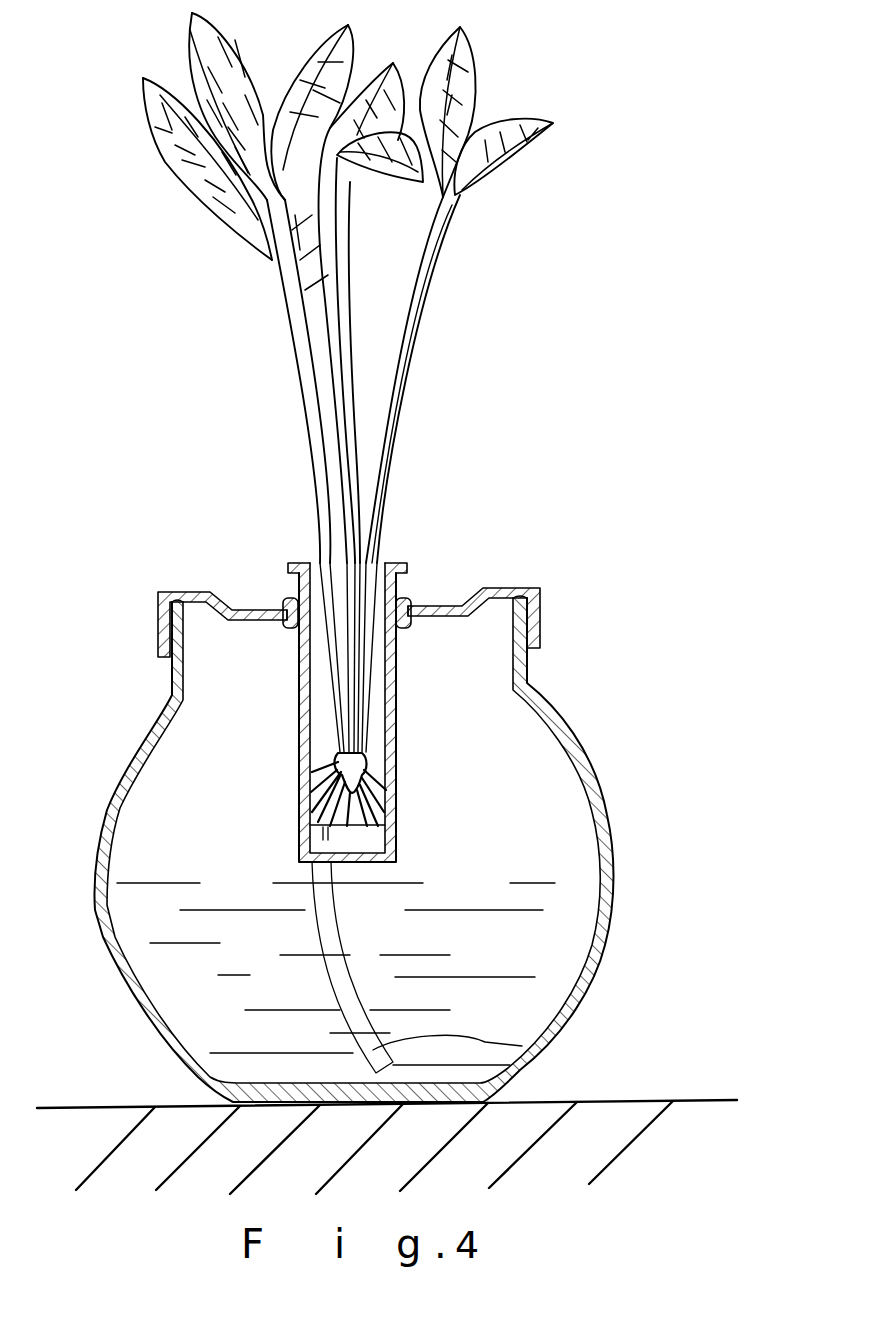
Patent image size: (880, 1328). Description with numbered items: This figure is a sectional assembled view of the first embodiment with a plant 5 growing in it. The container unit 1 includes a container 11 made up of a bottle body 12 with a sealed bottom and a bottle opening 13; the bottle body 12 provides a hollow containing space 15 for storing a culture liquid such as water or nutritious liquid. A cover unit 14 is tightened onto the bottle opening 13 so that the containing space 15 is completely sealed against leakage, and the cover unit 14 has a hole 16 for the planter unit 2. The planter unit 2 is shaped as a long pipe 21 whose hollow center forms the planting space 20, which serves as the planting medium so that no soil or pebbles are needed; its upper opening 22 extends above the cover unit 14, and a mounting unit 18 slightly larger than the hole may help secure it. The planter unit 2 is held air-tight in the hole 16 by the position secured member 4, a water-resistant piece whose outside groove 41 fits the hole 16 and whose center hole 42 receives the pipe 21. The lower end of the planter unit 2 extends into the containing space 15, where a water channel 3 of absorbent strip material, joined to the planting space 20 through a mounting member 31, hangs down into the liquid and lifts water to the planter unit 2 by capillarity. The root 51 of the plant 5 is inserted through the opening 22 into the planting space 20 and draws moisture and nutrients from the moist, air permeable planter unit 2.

The container unit 1 is at (372, 847).
The container 11 is at (592, 787).
The bottle body 12 is at (600, 942).
The bottle opening 13 is at (520, 623).
The cover unit 14 is at (365, 579).
The containing space 15 is at (505, 705).
The hole 16 is at (287, 613).
The mounting unit 18 is at (385, 570).
The planter unit 2 is at (419, 674).
The planting space 20 is at (320, 690).
The long pipe 21 is at (390, 785).
The opening 22 is at (309, 568).
The water channel 3 is at (528, 1052).
The mounting member 31 is at (367, 845).
The position secured member 4 is at (358, 546).
The outside groove 41 is at (407, 613).
The center hole 42 is at (283, 612).
The plant 5 is at (400, 358).
The root 51 is at (395, 755).